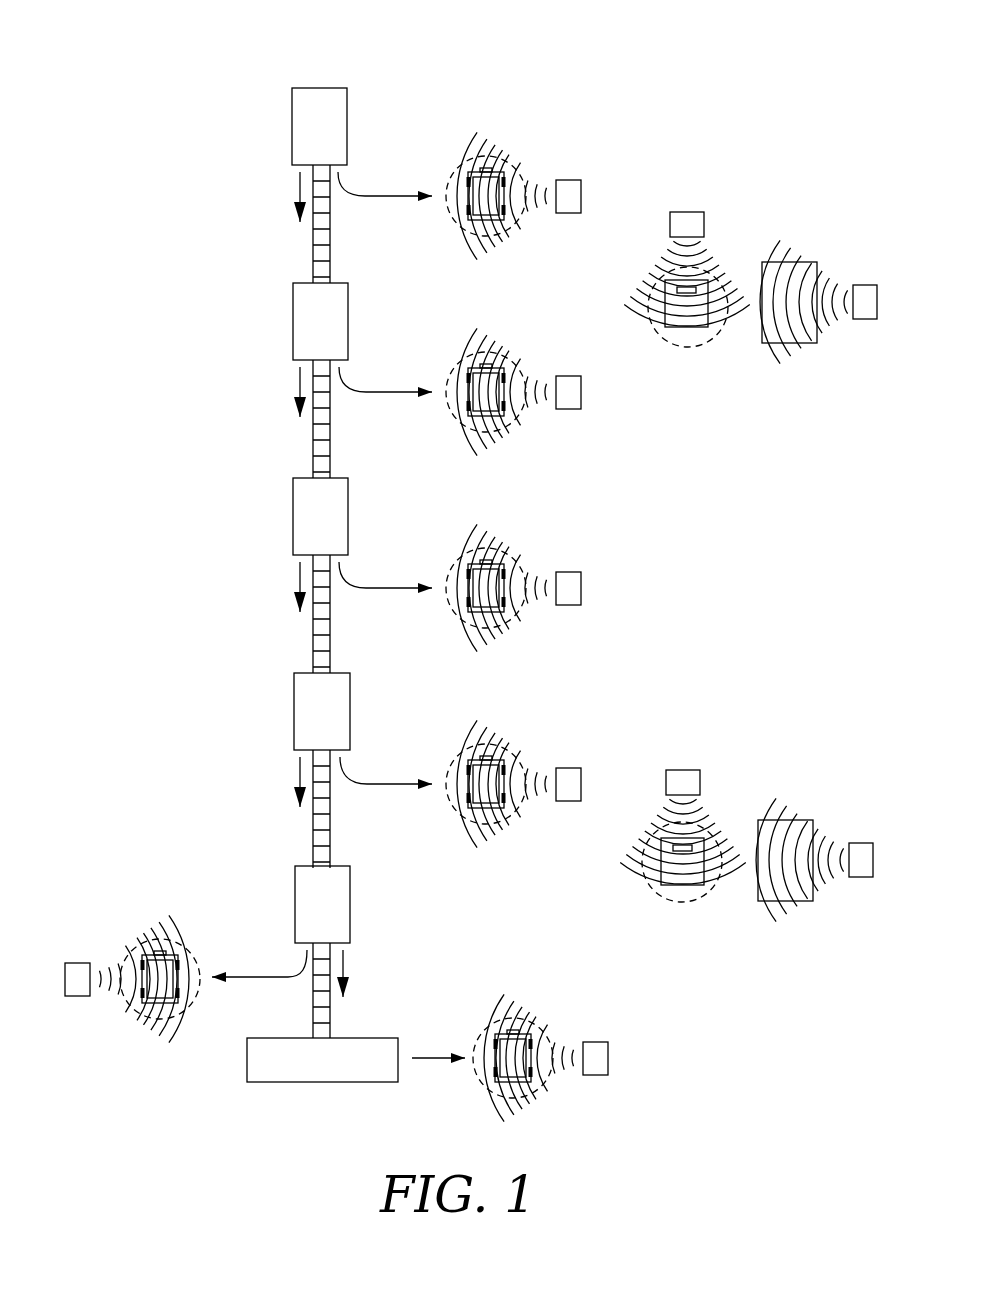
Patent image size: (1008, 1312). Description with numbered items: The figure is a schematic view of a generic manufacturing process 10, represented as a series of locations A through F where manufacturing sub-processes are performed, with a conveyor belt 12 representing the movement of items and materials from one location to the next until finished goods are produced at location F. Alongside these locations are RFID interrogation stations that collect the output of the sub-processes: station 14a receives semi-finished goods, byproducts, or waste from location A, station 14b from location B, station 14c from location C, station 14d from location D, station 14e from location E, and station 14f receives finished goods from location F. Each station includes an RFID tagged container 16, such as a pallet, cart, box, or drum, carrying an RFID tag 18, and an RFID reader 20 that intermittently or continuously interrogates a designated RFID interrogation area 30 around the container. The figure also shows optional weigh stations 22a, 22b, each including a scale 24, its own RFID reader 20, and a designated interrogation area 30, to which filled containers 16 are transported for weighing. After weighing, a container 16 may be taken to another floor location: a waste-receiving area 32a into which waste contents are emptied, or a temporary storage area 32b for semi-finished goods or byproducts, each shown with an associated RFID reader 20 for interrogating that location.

The manufacturing process 10 is at (268, 67).
The conveyor belt 12 is at (325, 212).
The station 14a is at (473, 176).
The station 14b is at (474, 372).
The station 14c is at (473, 568).
The station 14d is at (474, 764).
The station 14e is at (118, 930).
The station 14f is at (522, 1038).
The container 16 is at (158, 1008).
The RFID tag 18 is at (158, 950).
The RFID reader 20 is at (77, 997).
The wireless sensing station 22a is at (743, 231).
The wireless sensing station 22b is at (735, 793).
The scale 24 is at (695, 328).
The RFID interrogation area 30 is at (198, 944).
The waste-receiving area 32a is at (805, 343).
The temporary storage area 32b is at (775, 903).